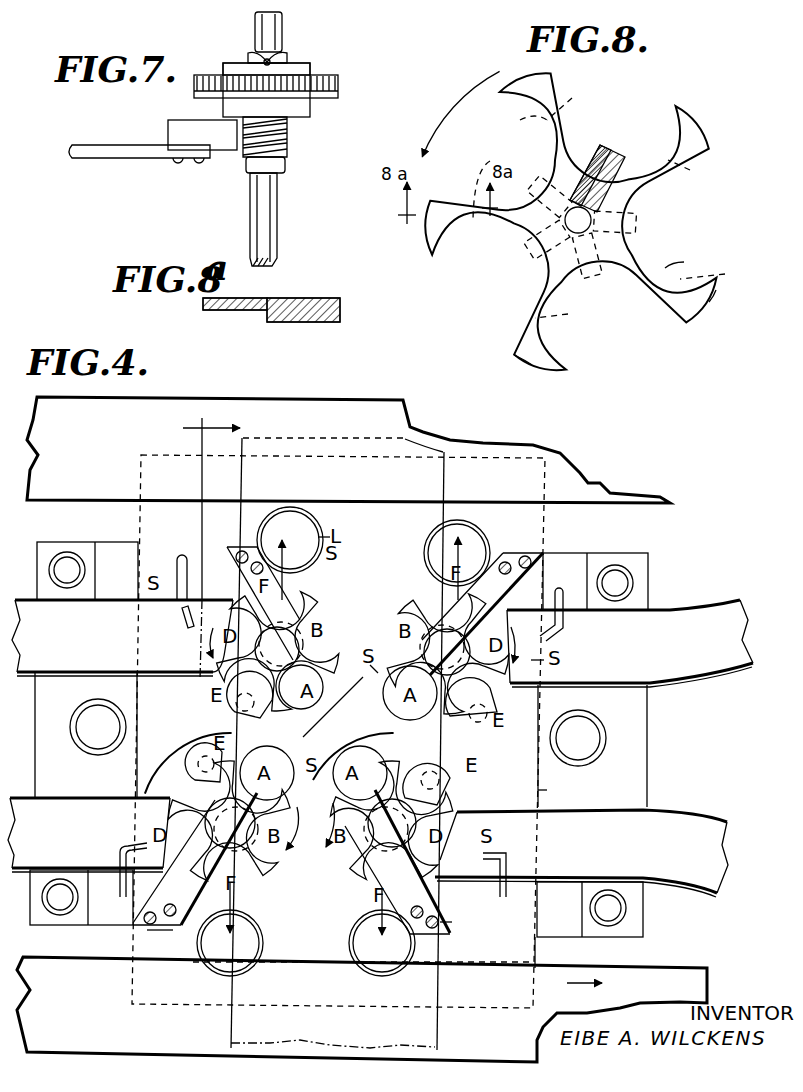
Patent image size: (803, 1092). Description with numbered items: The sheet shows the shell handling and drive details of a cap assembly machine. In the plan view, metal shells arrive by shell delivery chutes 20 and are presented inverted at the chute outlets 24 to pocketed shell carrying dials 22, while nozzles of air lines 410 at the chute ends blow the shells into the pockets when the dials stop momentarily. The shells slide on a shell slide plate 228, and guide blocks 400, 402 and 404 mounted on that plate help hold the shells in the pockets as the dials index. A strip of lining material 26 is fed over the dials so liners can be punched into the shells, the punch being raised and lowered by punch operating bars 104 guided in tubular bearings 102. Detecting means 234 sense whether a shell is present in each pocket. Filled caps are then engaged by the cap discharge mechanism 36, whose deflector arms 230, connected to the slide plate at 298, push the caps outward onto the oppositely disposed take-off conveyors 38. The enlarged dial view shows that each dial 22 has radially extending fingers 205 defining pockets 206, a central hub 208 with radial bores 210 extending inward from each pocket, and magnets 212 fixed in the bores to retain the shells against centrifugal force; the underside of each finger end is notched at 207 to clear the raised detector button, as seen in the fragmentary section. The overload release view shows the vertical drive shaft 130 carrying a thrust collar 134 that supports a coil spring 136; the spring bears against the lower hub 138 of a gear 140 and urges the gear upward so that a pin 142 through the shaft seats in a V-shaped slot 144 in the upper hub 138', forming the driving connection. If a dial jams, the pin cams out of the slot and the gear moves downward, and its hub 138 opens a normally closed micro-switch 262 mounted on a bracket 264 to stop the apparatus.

In FIG. 7, the vertical drive shaft 130 is at (282, 31).
In FIG. 7, the thrust collar 134 is at (286, 167).
In FIG. 7, the coil spring 136 is at (288, 149).
In FIG. 7, the lower hub 138 is at (292, 95).
In FIG. 7, the upper hub 138' is at (298, 63).
In FIG. 7, the gear 140 is at (339, 85).
In FIG. 7, the pin 142 is at (284, 58).
In FIG. 7, the V-shaped slot 144 is at (258, 61).
In FIG. 7, the micro-switch 262 is at (176, 120).
In FIG. 7, the bracket 264 is at (142, 159).
In FIG. 8, the shell carrying dial 22 is at (704, 132).
In FIG. 8A, the shell carrying dial 22 is at (297, 297).
In FIG. 4, the shell carrying dial 22 is at (338, 608).
In FIG. 8, the finger 205 is at (527, 364).
In FIG. 8A, the finger 205 is at (319, 323).
In FIG. 8, the pocket 206 is at (662, 273).
In FIG. 8, the notch 207 is at (619, 203).
In FIG. 8A, the notch 207 is at (241, 312).
In FIG. 8, the hub 208 is at (540, 262).
In FIG. 8, the radial bore 210 is at (596, 150).
In FIG. 8, the magnet 212 is at (592, 170).
In FIG. 4, the shell delivery chute 20 is at (110, 600).
In FIG. 4, the chute outlet 24 is at (231, 598).
In FIG. 4, the strip of lining material 26 is at (437, 473).
In FIG. 4, the cap discharge mechanism 36 is at (540, 589).
In FIG. 4, the take-off conveyor 38 is at (355, 391).
In FIG. 4, the tubular bearing 102 is at (75, 710).
In FIG. 4, the punch operating bar 104 is at (73, 738).
In FIG. 4, the shell slide plate 228 is at (537, 956).
In FIG. 4, the deflector arm 230 is at (288, 575).
In FIG. 4, the detecting means 234 is at (183, 758).
In FIG. 4, the connection 298 is at (147, 930).
In FIG. 4, the guide block 400 is at (146, 793).
In FIG. 4, the guide block 402 is at (348, 728).
In FIG. 4, the guide block 404 is at (564, 785).
In FIG. 4, the air line 410 is at (184, 627).